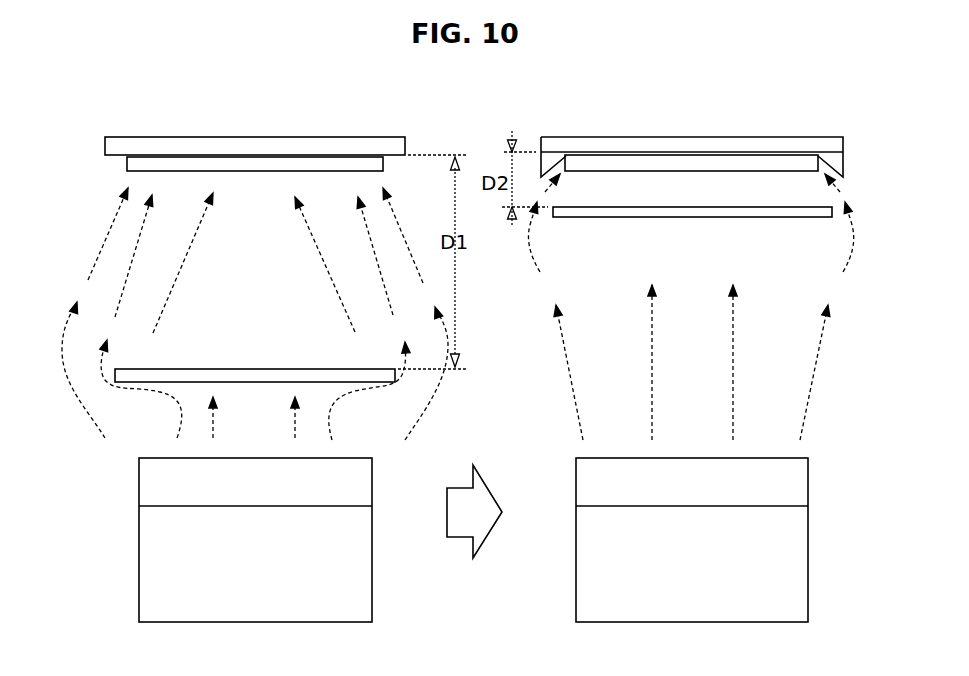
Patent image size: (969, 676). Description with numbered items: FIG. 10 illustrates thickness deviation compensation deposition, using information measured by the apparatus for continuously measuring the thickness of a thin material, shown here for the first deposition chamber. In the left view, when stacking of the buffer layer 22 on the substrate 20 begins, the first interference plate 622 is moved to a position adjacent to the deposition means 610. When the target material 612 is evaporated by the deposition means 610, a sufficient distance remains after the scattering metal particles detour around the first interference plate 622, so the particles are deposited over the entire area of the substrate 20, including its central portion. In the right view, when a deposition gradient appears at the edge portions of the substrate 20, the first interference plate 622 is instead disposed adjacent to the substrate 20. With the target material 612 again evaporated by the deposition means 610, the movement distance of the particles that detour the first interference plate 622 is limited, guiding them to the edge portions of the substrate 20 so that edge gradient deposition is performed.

The substrate 20 is at (105, 148).
The buffer layer 22 is at (128, 162).
The first interference plate 622 is at (238, 369).
The deposition means 610 is at (118, 602).
The target material 612 is at (148, 478).